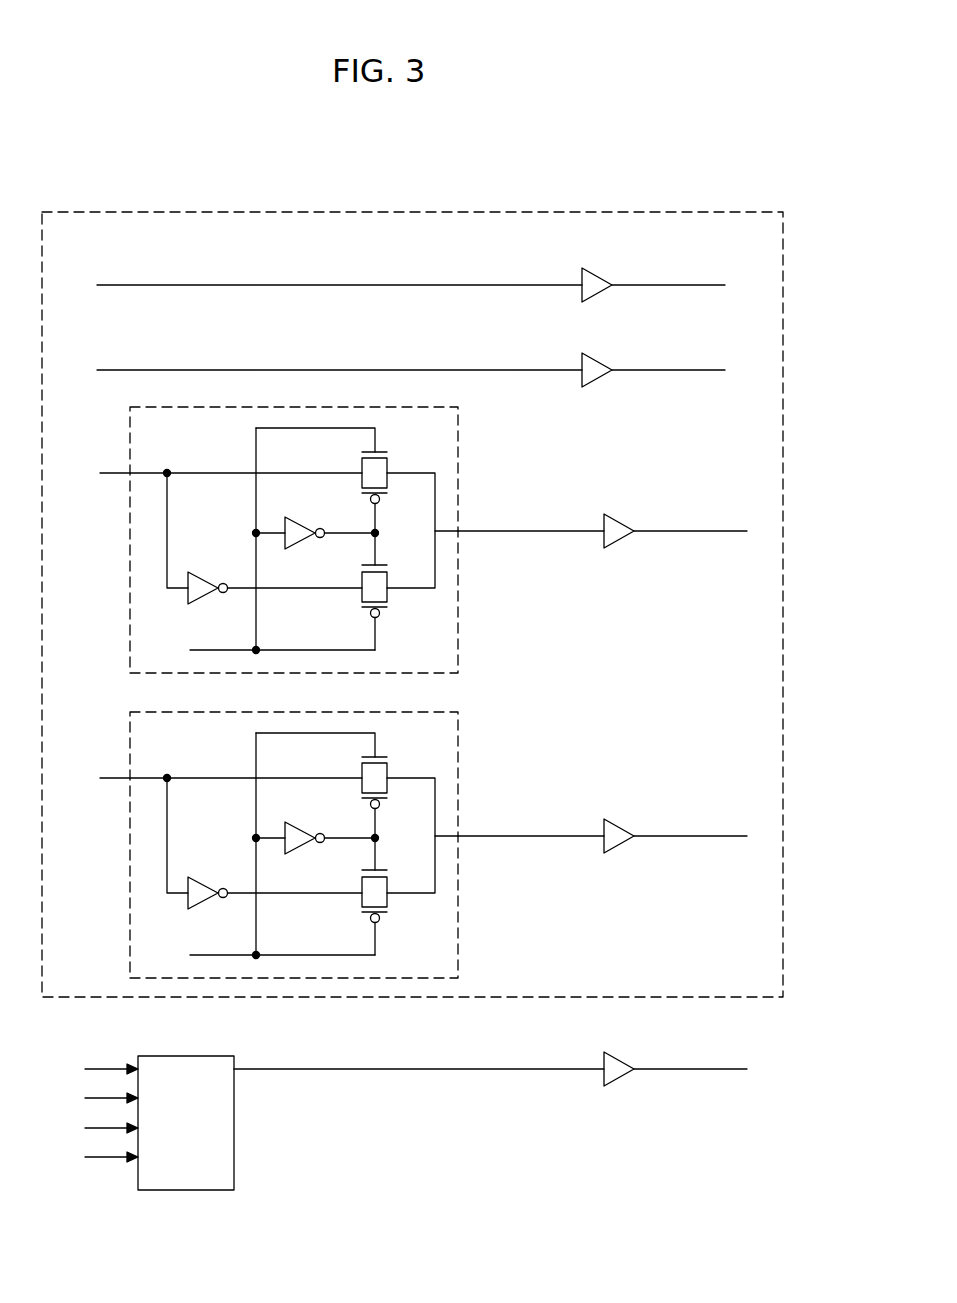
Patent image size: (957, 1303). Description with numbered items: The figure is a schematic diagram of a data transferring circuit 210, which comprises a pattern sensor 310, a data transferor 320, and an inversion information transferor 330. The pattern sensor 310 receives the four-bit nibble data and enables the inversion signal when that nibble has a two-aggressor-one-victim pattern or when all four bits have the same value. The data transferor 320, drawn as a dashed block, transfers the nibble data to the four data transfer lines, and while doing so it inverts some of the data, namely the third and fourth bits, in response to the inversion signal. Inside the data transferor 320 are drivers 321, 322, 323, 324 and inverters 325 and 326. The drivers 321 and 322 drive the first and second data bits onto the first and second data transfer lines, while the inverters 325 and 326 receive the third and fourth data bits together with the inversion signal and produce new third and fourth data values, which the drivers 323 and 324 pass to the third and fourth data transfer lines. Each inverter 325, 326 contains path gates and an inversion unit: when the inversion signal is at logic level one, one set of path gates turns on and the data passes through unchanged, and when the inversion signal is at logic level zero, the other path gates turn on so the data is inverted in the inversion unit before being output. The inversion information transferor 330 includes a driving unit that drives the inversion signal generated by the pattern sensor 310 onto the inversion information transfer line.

The data transferring circuit 210 is at (740, 170).
The data transferor 320 is at (553, 212).
The driver 321 is at (597, 267).
The driver 322 is at (597, 352).
The driver 323 is at (619, 513).
The driver 324 is at (619, 818).
The inverter 325 is at (458, 431).
The inverter 326 is at (458, 736).
The pattern sensor 310 is at (205, 1056).
The inversion information transferor 330 is at (624, 1059).